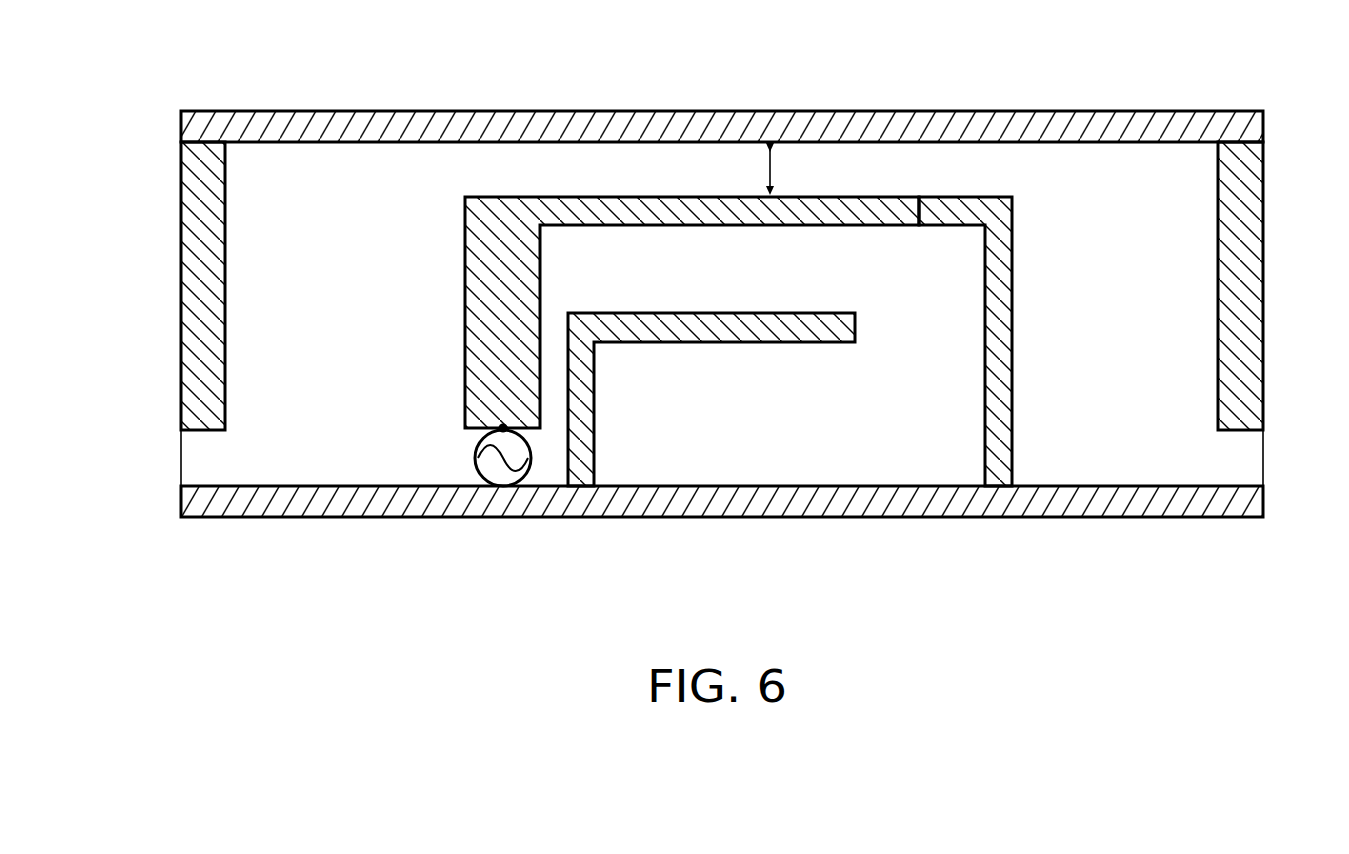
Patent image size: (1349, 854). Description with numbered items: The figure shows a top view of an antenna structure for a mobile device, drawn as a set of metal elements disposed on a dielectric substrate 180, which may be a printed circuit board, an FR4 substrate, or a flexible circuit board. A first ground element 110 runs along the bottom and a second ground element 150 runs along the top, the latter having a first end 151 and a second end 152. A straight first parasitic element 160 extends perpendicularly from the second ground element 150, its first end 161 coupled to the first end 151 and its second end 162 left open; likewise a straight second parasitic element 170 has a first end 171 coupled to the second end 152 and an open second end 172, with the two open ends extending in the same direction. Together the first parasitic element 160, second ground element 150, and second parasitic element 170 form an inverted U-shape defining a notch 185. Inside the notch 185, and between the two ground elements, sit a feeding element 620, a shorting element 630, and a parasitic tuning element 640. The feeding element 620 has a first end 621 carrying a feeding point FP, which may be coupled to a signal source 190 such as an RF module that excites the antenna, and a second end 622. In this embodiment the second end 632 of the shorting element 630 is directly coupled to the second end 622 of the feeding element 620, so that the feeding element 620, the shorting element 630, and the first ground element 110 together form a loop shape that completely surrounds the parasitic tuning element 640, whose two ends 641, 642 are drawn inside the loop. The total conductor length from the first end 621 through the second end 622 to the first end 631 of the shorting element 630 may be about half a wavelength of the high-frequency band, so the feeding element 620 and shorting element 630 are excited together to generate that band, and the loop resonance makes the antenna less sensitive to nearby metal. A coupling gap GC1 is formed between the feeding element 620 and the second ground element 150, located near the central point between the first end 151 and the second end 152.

The first ground element 110 is at (722, 518).
The second ground element 150 is at (708, 122).
The first end of second ground element 151 is at (181, 128).
The second end of second ground element 152 is at (1263, 122).
The first parasitic element 160 is at (197, 287).
The first end of first parasitic element 161 is at (200, 150).
The second end of first parasitic element 162 is at (200, 425).
The second parasitic element 170 is at (1250, 275).
The first end of second parasitic element 171 is at (1243, 150).
The second end of second parasitic element 172 is at (1243, 425).
The dielectric substrate 180 is at (181, 460).
The notch 185 is at (330, 170).
The signal source 190 is at (474, 462).
The feeding element 620 is at (495, 242).
The first end of feeding element 621 is at (480, 427).
The second end of feeding element 622 is at (910, 215).
The shorting element 630 is at (1000, 348).
The first end of shorting element 631 is at (1000, 482).
The second end of shorting element 632 is at (925, 205).
The parasitic tuning element 640 is at (697, 332).
The grounded end of third radiating element 641 is at (582, 485).
The open end of third radiating element 642 is at (855, 325).
The feeding point FP is at (503, 424).
The coupling gap GC1 is at (801, 169).